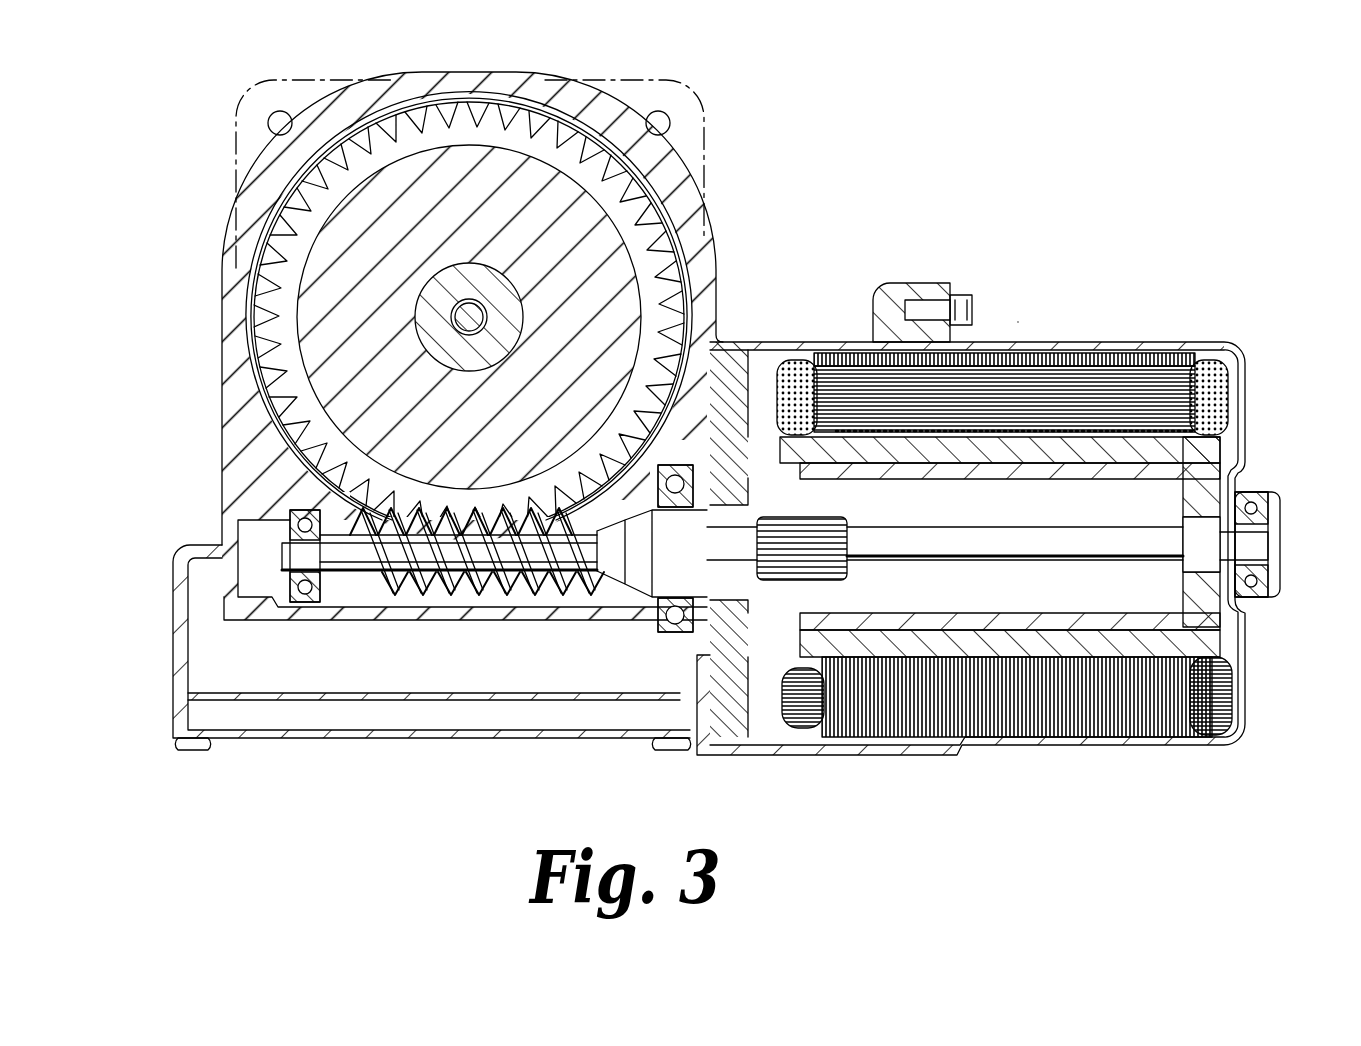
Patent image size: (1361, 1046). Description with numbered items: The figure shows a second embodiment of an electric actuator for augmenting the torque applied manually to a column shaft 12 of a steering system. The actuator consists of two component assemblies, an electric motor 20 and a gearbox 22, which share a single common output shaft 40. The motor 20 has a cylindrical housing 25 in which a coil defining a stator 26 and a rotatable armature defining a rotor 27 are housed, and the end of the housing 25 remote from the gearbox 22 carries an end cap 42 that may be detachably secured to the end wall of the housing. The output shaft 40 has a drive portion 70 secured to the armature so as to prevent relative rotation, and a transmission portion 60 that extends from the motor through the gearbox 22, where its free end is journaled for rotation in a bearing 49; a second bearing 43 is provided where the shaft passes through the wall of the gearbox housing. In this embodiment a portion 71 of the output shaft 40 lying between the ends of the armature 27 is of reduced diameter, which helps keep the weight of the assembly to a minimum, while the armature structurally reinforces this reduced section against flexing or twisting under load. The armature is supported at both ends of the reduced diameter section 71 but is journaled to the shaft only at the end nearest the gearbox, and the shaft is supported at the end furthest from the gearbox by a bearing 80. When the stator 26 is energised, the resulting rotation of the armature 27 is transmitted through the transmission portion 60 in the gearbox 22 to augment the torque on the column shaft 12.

The column shaft 12 is at (493, 280).
The electric motor 20 is at (1017, 322).
The gearbox 22 is at (262, 410).
The cylindrical housing 25 is at (1186, 345).
The stator 26 is at (1222, 378).
The rotor 27 is at (873, 642).
The output shaft 40 is at (1028, 548).
The end cap 42 is at (1240, 686).
The second bearing 43 is at (657, 614).
The bearing 49 is at (300, 531).
The transmission portion 60 is at (605, 592).
The drive portion 70 is at (1114, 516).
The reduced diameter section 71 is at (1003, 562).
The bearing 80 is at (1268, 491).